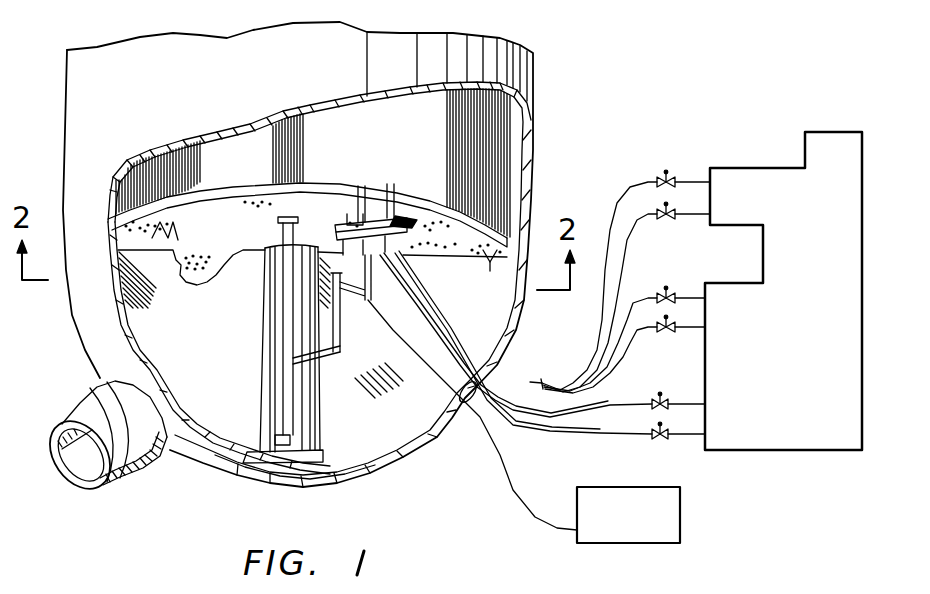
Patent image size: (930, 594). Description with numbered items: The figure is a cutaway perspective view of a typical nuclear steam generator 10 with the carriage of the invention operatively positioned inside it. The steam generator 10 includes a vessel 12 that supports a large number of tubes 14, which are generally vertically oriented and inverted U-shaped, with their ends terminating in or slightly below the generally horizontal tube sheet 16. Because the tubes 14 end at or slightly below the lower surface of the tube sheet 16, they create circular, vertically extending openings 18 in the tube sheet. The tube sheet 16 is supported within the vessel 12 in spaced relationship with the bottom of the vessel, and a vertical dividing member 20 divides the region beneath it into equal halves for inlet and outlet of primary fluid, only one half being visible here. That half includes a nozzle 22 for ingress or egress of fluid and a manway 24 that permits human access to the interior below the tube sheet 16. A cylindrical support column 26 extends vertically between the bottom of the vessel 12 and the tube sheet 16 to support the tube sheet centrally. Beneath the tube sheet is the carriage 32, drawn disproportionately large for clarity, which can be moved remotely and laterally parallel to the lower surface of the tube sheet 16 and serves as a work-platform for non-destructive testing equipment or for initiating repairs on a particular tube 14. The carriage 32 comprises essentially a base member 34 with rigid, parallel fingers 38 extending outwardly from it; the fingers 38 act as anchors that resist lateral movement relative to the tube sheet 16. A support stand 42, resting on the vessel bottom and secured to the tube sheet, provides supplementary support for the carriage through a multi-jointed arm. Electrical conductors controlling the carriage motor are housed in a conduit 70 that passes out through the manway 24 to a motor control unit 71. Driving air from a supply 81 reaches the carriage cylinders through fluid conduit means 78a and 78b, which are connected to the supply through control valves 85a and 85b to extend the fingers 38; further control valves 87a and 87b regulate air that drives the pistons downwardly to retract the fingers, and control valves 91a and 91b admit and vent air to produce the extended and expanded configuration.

The nuclear steam generator 10 is at (609, 77).
The vessel 12 is at (344, 284).
The tubes 14 is at (349, 243).
The tube sheet 16 is at (123, 213).
The openings 18 is at (312, 246).
The vertical dividing member 20 is at (148, 321).
The nozzle 22 is at (89, 440).
The manway 24 is at (453, 427).
The cylindrical support column 26 is at (326, 352).
The carriage 32 is at (345, 215).
The base member 34 is at (338, 207).
The fingers 38 is at (388, 226).
The support stand 42 is at (263, 340).
The conduit 70 is at (472, 415).
The motor control unit 71 is at (653, 515).
The fluid conduit means 78a is at (516, 340).
The fluid conduit means 78b is at (523, 352).
The air supply 81 is at (765, 279).
The control valve 85a is at (619, 435).
The control valve 85b is at (689, 452).
The control valve 87a is at (610, 354).
The control valve 87b is at (614, 321).
The control valve 91a is at (609, 270).
The control valve 91b is at (619, 251).